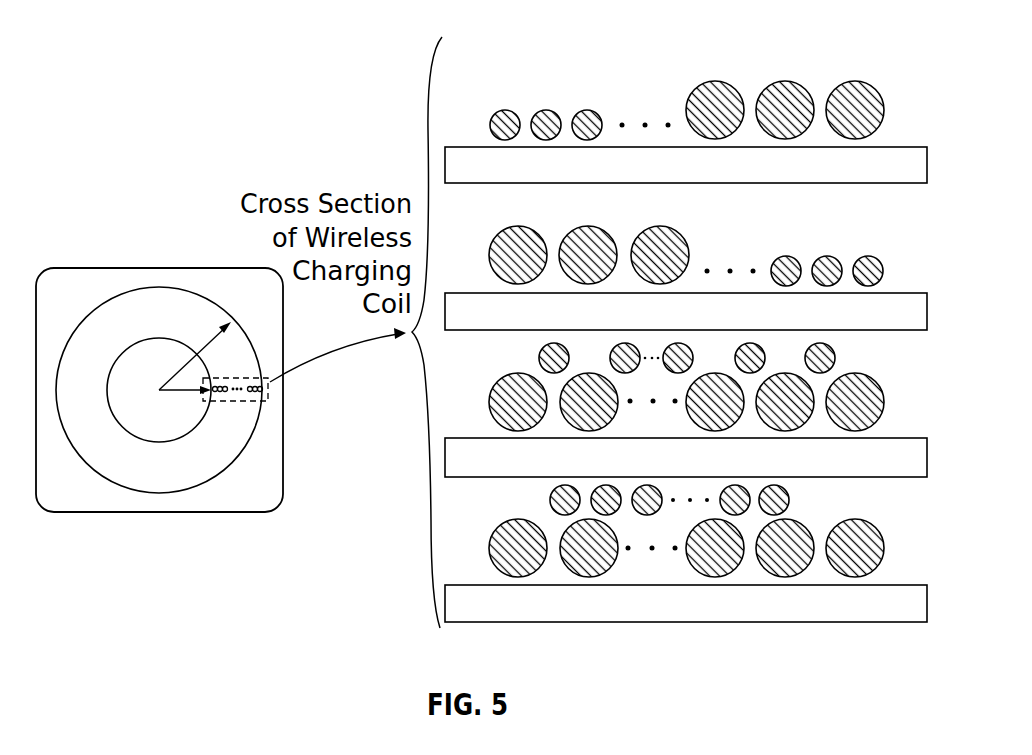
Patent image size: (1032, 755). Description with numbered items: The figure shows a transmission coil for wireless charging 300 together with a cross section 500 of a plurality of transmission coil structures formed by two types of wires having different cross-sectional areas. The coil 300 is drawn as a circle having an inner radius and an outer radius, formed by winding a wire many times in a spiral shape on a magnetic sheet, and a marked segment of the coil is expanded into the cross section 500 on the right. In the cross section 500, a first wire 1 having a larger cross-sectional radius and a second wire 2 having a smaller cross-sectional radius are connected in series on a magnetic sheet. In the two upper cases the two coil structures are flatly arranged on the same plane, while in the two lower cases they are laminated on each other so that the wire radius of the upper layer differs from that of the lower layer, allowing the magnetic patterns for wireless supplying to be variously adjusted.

The transmission coil for wireless charging 300 is at (132, 288).
The cross section of wireless charging coil 500 is at (689, 312).
The first wire (radius r1) 1 is at (855, 110).
The second wire (radius r2) 2 is at (587, 125).